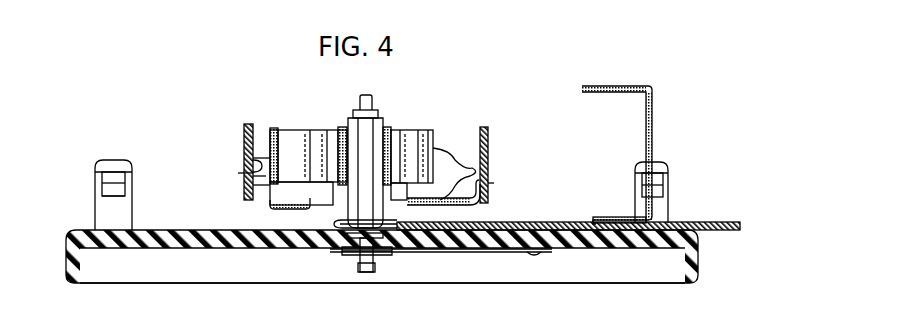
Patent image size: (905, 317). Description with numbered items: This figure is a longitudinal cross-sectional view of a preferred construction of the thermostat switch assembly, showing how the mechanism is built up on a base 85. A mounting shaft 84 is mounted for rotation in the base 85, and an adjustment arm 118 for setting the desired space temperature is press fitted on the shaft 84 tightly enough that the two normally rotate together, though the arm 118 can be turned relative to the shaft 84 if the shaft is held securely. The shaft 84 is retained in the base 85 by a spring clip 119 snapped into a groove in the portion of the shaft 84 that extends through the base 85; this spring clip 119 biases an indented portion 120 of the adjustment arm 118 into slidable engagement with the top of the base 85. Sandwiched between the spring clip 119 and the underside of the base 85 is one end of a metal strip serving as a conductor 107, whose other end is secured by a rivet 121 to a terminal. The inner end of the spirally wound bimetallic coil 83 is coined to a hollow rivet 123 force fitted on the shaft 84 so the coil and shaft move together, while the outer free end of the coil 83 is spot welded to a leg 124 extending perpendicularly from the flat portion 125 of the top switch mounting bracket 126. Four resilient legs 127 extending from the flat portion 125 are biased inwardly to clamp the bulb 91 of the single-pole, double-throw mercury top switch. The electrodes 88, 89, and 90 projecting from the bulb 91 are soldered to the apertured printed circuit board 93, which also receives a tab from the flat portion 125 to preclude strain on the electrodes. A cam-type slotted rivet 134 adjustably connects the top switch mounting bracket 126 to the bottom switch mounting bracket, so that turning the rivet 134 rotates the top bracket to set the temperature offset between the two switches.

The base 85 is at (698, 245).
The conductor 107 is at (478, 249).
The rivet 121 is at (537, 253).
The indented portion 120 is at (668, 218).
The adjustment arm 118 is at (735, 222).
The resilient legs 127 is at (336, 222).
The spring clip 119 is at (378, 253).
The mounting shaft 84 is at (370, 132).
The leg 124 is at (270, 135).
The top switch mounting bracket 126 is at (270, 140).
The hollow rivet 123 is at (340, 127).
The bimetallic coil 83 is at (433, 148).
The cam-type slotted rivet 134 is at (488, 180).
The bulb 91 is at (455, 168).
The printed circuit board 93 is at (246, 152).
The electrode 90 is at (245, 160).
The electrode 89 is at (240, 176).
The electrode 88 is at (246, 183).
The flat portion 125 is at (287, 214).